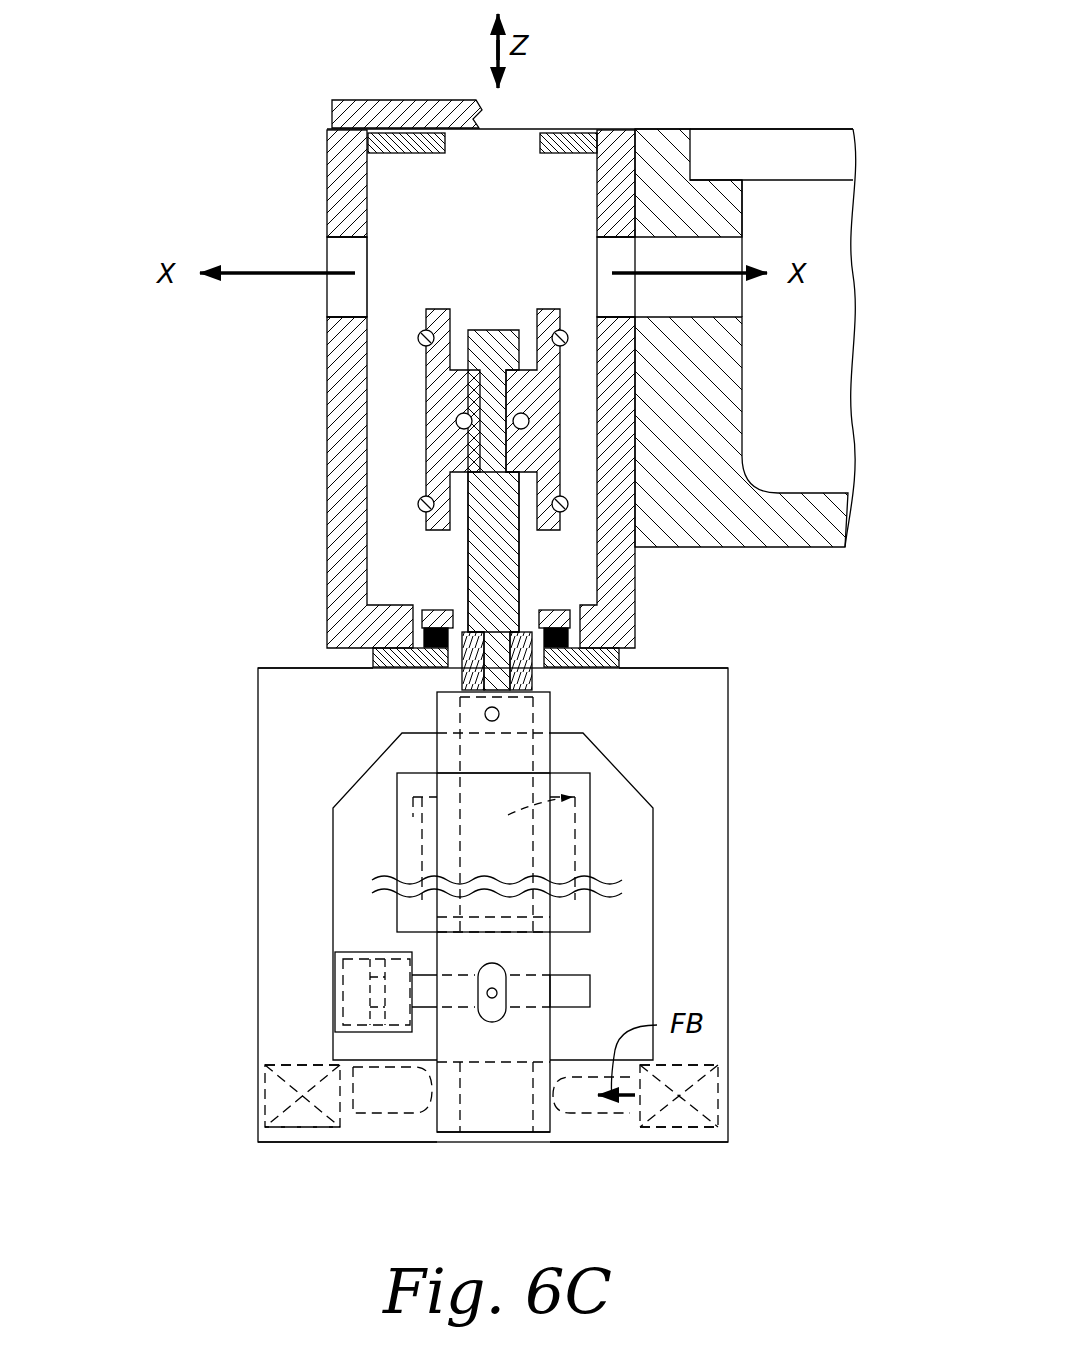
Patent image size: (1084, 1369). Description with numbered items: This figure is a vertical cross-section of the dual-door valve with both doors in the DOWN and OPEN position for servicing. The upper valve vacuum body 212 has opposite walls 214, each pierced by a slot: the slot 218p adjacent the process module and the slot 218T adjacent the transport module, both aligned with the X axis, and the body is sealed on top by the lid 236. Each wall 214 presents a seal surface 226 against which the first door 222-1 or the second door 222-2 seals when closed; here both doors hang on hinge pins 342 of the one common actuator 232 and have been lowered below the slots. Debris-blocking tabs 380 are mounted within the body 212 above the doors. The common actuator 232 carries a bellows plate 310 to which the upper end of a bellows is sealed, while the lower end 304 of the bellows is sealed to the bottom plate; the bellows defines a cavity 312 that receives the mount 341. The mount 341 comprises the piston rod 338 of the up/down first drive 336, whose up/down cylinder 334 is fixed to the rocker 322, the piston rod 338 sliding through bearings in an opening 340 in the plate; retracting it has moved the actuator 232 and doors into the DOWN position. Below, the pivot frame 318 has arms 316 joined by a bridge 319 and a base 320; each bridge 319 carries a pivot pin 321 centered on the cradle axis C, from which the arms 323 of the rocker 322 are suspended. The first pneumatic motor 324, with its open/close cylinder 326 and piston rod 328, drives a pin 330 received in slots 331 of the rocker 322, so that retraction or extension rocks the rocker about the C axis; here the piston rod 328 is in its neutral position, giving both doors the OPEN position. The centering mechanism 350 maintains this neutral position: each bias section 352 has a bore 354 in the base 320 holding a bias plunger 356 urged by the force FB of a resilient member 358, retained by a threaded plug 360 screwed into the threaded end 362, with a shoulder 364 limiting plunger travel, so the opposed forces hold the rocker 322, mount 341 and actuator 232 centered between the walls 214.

The upper valve vacuum body 212 is at (327, 178).
The wall 214 is at (640, 140).
The slot adjacent to the process module 218p is at (598, 250).
The slot adjacent to the transport module 218T is at (340, 289).
The first door 222-1 is at (555, 352).
The second door 222-2 is at (438, 305).
The seal surface 226 is at (596, 150).
The common actuator 232 is at (480, 548).
The lid 236 is at (405, 112).
The lower end of the bellows 304 is at (422, 640).
The bellows plate 310 is at (540, 612).
The cavity 312 is at (570, 640).
The arms 316 is at (262, 800).
The pivot frame 318 is at (750, 790).
The bridge 319 is at (305, 710).
The base 320 is at (385, 1130).
The pivot pin 321 is at (483, 714).
The rocker 322 is at (452, 838).
The arms of the rocker 323 is at (593, 1013).
The first pneumatic motor 324 is at (352, 946).
The open/close cylinder 326 is at (333, 965).
The piston rod 328 is at (340, 1000).
The pin 330 is at (518, 1015).
The slots 331 is at (493, 962).
The up/down cylinder 334 is at (397, 795).
The first drive 336 is at (600, 865).
The piston rod 338 is at (578, 794).
The opening 340 is at (545, 668).
The mount 341 is at (458, 678).
The hinge pins 342 is at (515, 428).
The centering mechanism 350 is at (256, 1150).
The bias section 352 is at (690, 1135).
The bore 354 is at (297, 1048).
The bias plunger 356 is at (420, 1130).
The resilient member 358 is at (722, 1092).
The threaded plug 360 is at (258, 1110).
The threaded end 362 is at (258, 1093).
The shoulder 364 is at (360, 1130).
The debris-blocking tabs 380 is at (440, 142).